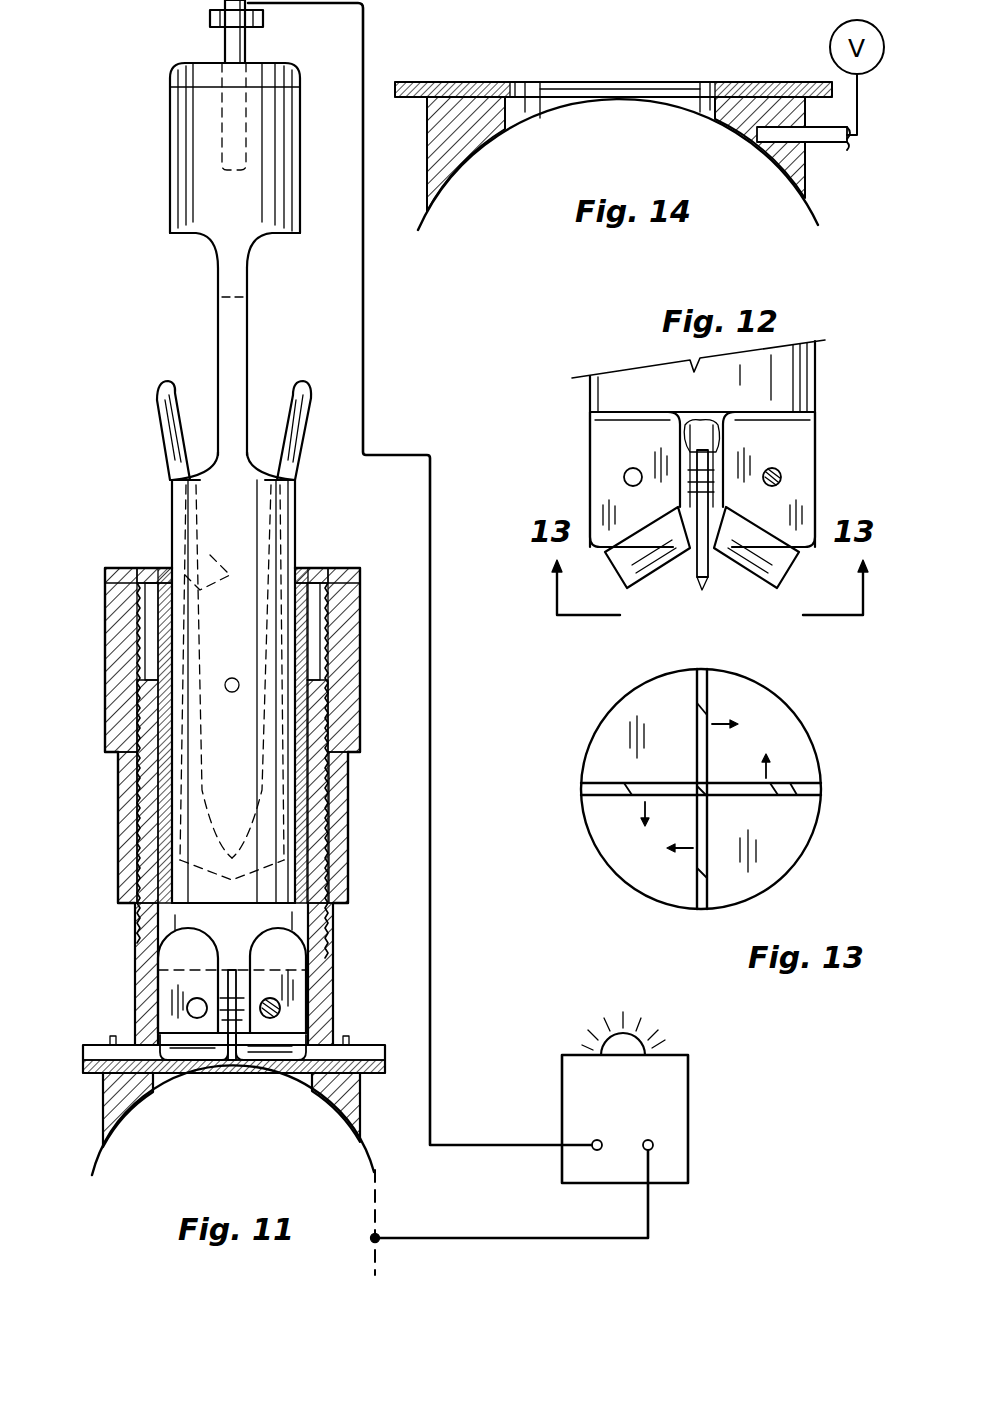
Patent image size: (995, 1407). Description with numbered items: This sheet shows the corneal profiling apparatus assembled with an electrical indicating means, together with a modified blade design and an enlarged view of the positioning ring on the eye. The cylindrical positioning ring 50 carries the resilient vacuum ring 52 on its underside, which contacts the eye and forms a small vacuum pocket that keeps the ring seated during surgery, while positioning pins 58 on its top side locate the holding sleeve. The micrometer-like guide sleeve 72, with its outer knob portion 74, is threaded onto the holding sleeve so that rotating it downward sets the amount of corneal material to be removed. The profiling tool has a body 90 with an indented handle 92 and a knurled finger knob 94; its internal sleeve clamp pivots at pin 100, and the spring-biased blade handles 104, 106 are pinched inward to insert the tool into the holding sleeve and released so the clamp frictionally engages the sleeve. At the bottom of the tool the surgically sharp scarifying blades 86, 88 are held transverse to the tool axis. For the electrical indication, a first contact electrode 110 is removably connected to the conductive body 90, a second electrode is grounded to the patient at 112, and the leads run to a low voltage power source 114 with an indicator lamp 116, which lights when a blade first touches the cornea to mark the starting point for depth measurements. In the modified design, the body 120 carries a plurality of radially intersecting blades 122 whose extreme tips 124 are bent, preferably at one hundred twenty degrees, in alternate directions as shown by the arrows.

In FIG. 11, the cylindrical positioning ring 50 is at (366, 1074).
In FIG. 14, the cylindrical positioning ring 50 is at (740, 95).
In FIG. 11, the resilient vacuum ring 52 is at (128, 1106).
In FIG. 14, the resilient vacuum ring 52 is at (473, 95).
In FIG. 11, the positioning pins 58 is at (340, 1044).
In FIG. 11, the guide sleeve 72 is at (340, 836).
In FIG. 11, the outer knob portion 74 is at (345, 600).
In FIG. 11, the scarifying blade 86 is at (185, 1050).
In FIG. 11, the scarifying blade 88 is at (230, 992).
In FIG. 11, the body 90 is at (232, 276).
In FIG. 11, the indented handle 92 is at (218, 328).
In FIG. 11, the knurled finger knob 94 is at (186, 167).
In FIG. 11, the pin 100 is at (232, 678).
In FIG. 11, the blade handle 104 is at (160, 401).
In FIG. 11, the blade handle 106 is at (308, 382).
In FIG. 11, the first contact electrode 110 is at (232, 52).
In FIG. 11, the ground connection 112 is at (378, 1188).
In FIG. 11, the low voltage power source 114 is at (672, 1128).
In FIG. 11, the indicator lamp 116 is at (646, 1042).
In FIG. 12, the body 120 is at (600, 396).
In FIG. 12, the radially intersecting blades 122 is at (655, 537).
In FIG. 13, the radially intersecting blades 122 is at (707, 755).
In FIG. 12, the extreme tip 124 is at (693, 588).
In FIG. 13, the extreme tip 124 is at (770, 783).